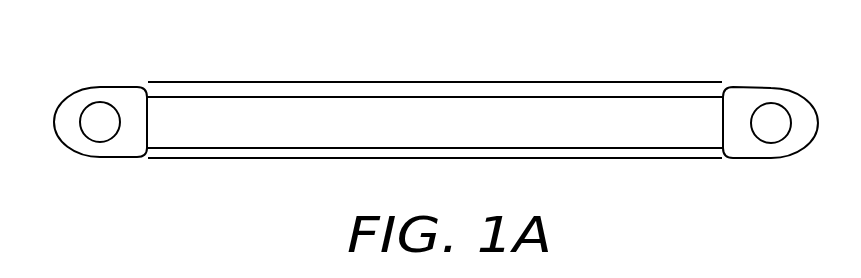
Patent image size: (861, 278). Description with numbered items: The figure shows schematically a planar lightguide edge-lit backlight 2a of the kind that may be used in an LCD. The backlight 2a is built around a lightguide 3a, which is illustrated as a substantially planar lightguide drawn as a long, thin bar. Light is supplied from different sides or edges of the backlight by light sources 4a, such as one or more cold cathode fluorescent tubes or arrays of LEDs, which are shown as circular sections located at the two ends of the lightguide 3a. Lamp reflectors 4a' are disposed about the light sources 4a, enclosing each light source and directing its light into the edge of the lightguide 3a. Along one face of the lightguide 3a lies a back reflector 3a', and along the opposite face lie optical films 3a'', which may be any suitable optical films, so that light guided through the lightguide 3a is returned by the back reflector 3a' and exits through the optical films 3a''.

The backlight 2a is at (123, 50).
The lightguide 3a is at (435, 84).
The back reflector 3a' is at (435, 186).
The optical films 3a'' is at (435, 51).
The light sources 4a is at (410, 159).
The lamp reflectors 4a' is at (448, 139).